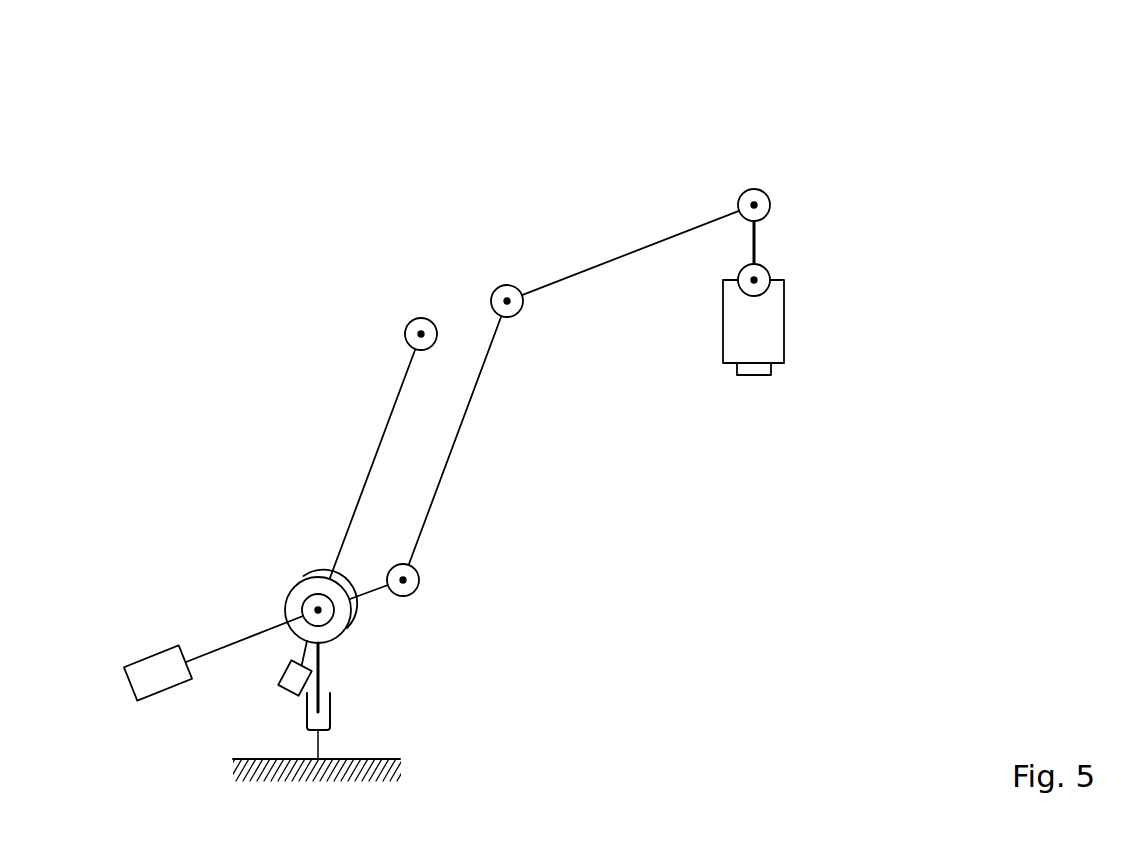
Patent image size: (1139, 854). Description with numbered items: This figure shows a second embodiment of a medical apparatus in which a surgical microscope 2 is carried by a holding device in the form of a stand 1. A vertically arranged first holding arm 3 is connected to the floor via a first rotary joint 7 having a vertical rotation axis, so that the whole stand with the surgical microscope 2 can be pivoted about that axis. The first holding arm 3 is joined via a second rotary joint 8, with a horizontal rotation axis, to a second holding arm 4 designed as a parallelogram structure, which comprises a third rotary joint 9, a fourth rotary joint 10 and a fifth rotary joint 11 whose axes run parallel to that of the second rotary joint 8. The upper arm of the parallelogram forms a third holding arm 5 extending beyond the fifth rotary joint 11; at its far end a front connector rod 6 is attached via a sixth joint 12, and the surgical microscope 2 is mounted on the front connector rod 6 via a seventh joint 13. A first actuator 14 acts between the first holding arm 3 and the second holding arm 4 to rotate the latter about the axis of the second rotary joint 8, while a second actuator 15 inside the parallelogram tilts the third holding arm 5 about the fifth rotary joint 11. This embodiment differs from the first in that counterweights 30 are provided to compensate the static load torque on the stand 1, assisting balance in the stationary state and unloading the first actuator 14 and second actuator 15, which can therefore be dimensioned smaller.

The stand 1 is at (305, 197).
The surgical microscope 2 is at (784, 312).
The first holding arm 3 is at (319, 679).
The second holding arm 4 is at (366, 480).
The third holding arm 5 is at (635, 251).
The front connector rod 6 is at (757, 236).
The first rotary joint 7 is at (331, 727).
The second rotary joint 8 is at (302, 608).
The third rotary joint 9 is at (420, 573).
The fourth rotary joint 10 is at (405, 336).
The fifth rotary joint 11 is at (500, 287).
The sixth joint 12 is at (752, 190).
The seventh joint 13 is at (770, 276).
The first actuator 14 is at (333, 641).
The second actuator 15 is at (356, 611).
The counterweights 30 is at (130, 684).